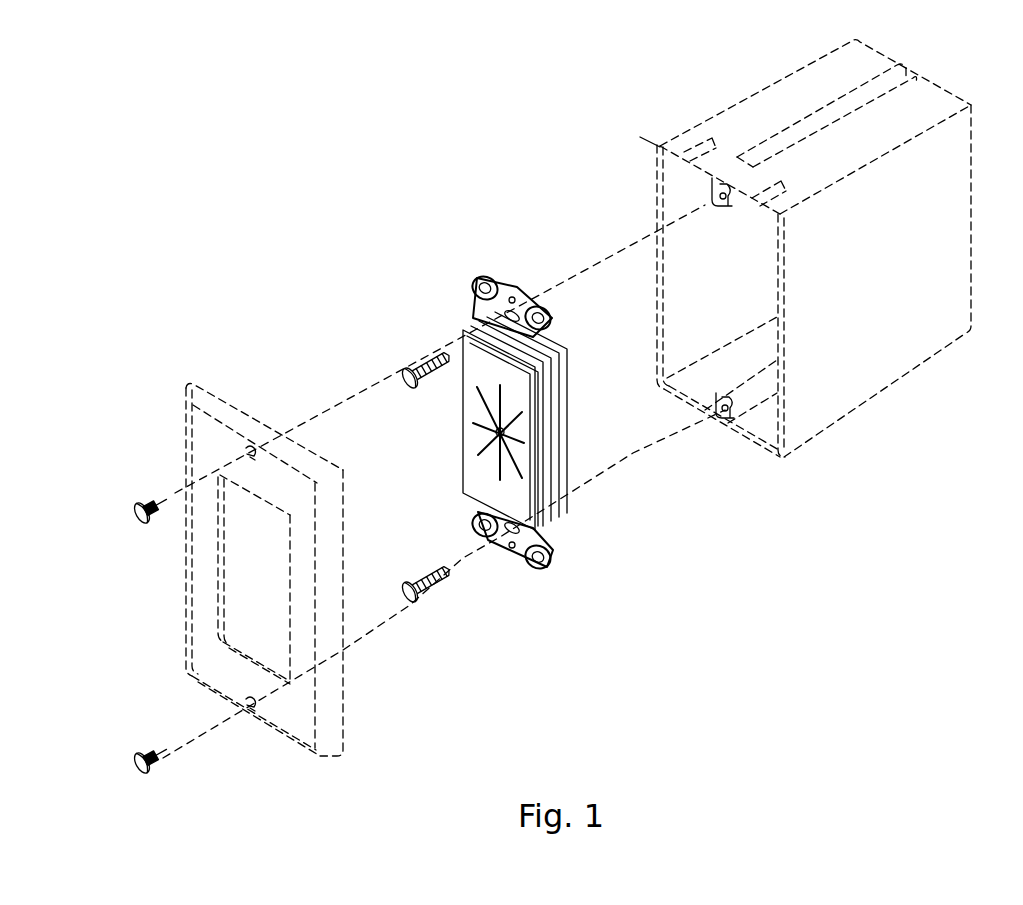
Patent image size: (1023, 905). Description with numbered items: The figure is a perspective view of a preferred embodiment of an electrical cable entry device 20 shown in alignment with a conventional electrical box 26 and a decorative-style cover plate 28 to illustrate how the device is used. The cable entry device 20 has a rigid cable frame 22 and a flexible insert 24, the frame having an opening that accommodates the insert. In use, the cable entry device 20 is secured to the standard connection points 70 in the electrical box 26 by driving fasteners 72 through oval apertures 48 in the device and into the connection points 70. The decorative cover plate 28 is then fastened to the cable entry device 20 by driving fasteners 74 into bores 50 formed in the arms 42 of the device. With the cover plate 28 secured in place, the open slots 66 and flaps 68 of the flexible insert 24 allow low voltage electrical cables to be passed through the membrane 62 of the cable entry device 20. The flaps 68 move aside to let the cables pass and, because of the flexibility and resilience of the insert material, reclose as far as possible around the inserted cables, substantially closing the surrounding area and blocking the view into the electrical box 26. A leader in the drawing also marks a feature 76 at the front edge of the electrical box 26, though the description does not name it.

The electrical cable entry device 20 is at (424, 313).
The rigid cable frame 22 is at (513, 290).
The flexible insert 24 is at (478, 477).
The electrical box 26 is at (875, 393).
The decorative-style cover plate 28 is at (330, 720).
The arms 42 is at (548, 557).
The oval apertures 48 is at (533, 533).
The bores 50 is at (513, 553).
The membrane 62 is at (525, 509).
The open slots 66 is at (503, 403).
The flaps 68 is at (493, 428).
The connection points 70 is at (718, 195).
The fasteners 72 is at (417, 363).
The fasteners 74 is at (150, 503).
The box front edge 76 is at (697, 165).